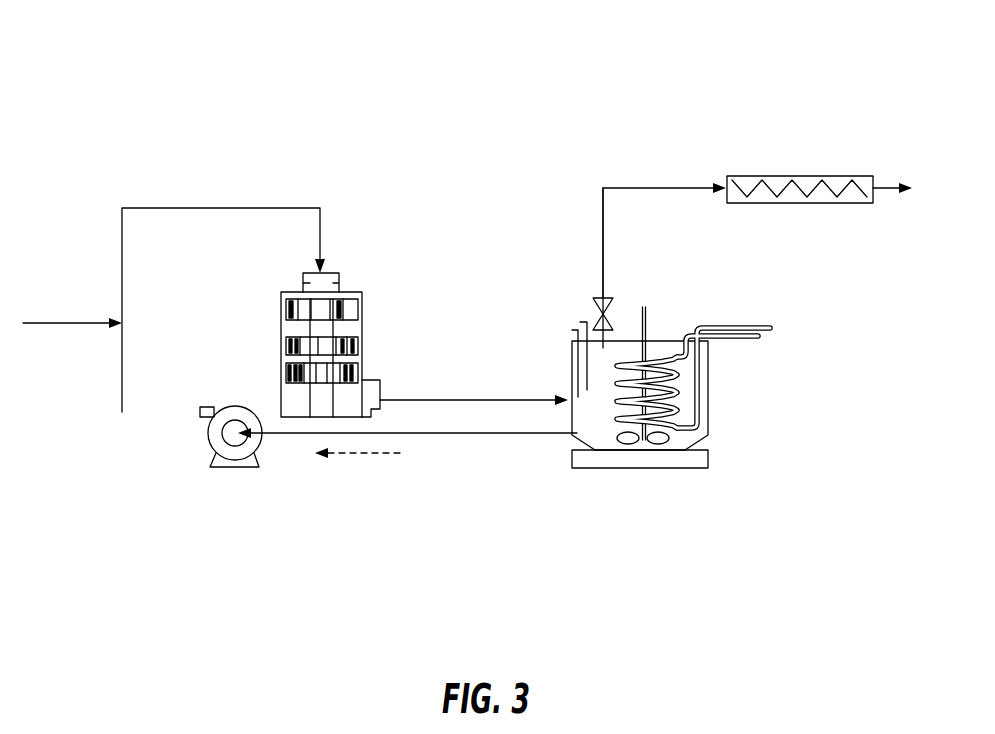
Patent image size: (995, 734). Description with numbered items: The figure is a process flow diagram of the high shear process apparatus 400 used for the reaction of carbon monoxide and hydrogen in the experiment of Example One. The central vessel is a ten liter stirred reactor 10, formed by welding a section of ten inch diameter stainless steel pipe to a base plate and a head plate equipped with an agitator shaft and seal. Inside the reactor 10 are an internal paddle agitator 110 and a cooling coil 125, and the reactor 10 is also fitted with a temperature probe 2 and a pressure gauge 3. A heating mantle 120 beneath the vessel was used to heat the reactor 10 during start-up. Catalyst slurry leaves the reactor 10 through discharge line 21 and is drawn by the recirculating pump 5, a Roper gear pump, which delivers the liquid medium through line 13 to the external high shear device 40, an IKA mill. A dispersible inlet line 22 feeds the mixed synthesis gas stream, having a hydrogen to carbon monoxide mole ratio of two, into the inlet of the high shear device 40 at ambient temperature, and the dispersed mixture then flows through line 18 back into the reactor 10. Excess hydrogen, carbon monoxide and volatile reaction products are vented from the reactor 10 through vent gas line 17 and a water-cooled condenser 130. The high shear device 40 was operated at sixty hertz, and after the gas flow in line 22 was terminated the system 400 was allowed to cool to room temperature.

The high shear process apparatus 400 is at (288, 64).
The line 13 is at (166, 208).
The dispersible inlet line 22 is at (63, 322).
The high shear device 40 is at (352, 292).
The recirculating pump 5 is at (230, 407).
The line 18 is at (495, 398).
The discharge line 21 is at (498, 435).
The temperature probe 2 is at (560, 328).
The pressure gauge 3 is at (568, 317).
The vent gas line 17 is at (664, 188).
The condenser 130 is at (800, 176).
The cooling coil 125 is at (737, 325).
The reactor 10 is at (712, 397).
The internal paddle agitator 110 is at (632, 445).
The heating mantle 120 is at (695, 470).